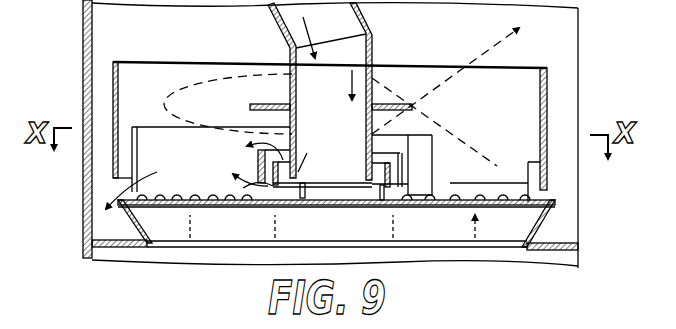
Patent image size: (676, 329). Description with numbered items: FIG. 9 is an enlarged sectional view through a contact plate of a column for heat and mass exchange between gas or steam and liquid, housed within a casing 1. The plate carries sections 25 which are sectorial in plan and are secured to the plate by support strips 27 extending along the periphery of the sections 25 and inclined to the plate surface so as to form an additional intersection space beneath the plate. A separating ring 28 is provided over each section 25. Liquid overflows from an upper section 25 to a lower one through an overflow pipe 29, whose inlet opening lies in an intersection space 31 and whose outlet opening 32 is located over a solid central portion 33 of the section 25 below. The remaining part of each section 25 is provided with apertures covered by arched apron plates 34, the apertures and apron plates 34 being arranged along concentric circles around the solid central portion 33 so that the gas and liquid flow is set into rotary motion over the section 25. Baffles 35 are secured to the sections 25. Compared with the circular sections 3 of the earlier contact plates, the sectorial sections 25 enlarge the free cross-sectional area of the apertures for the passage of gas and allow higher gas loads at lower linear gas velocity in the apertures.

The casing 1 is at (83, 173).
The sections 3 is at (198, 207).
The sections 25 is at (503, 212).
The support strips 27 is at (135, 216).
The separating ring 28 is at (547, 97).
The overflow pipes 29 is at (372, 22).
The intersection spaces 31 is at (112, 248).
The outlet openings 32 is at (343, 179).
The solid central portion 33 is at (348, 206).
The arched apron plates 34 is at (173, 193).
The baffles 35 is at (138, 150).